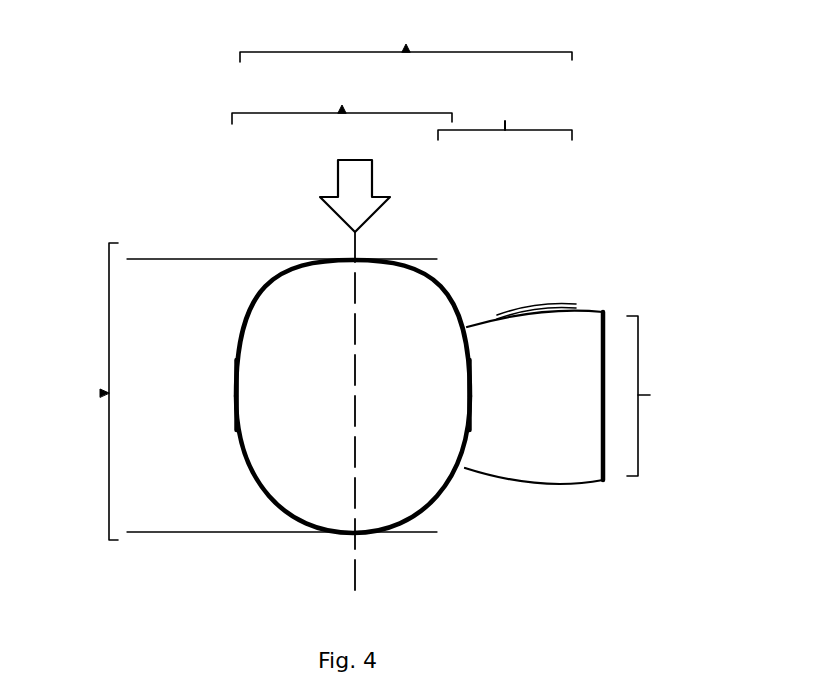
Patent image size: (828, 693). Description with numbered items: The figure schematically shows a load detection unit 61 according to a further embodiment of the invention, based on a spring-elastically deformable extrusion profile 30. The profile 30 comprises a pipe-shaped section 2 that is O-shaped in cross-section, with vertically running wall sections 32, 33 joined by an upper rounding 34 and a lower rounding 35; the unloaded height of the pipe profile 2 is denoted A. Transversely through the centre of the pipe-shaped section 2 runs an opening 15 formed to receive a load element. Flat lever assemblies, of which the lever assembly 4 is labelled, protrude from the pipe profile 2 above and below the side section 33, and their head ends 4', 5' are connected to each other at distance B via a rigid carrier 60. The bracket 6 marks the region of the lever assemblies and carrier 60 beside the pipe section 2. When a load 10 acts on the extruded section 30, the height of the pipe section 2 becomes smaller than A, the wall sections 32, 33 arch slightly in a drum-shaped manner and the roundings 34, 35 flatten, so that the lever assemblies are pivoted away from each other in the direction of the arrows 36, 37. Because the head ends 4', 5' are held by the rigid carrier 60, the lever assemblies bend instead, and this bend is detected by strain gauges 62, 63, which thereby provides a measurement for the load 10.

The load detection unit 61 is at (198, 145).
The extrusion profile 30 is at (406, 38).
The pipe-shaped section 2 is at (342, 99).
The holder portion 6 is at (505, 110).
The load 10 is at (352, 213).
The height of the pipe profile A is at (246, 391).
The opening 15 is at (358, 577).
The upper rounding 34 is at (432, 281).
The lower rounding 35 is at (445, 497).
The vertical wall section 32 is at (233, 385).
The vertical wall section 33 is at (470, 390).
The rigid carrier 60 is at (603, 433).
The lever assembly 4 is at (601, 365).
The strain gauge 62 is at (527, 308).
The strain gauge 63 is at (528, 320).
The arrow 36 is at (467, 285).
The arrow 37 is at (473, 500).
The head end of lever assembly 4' is at (644, 255).
The head end of lever assembly 5' is at (641, 530).
The distance between head ends B is at (655, 396).